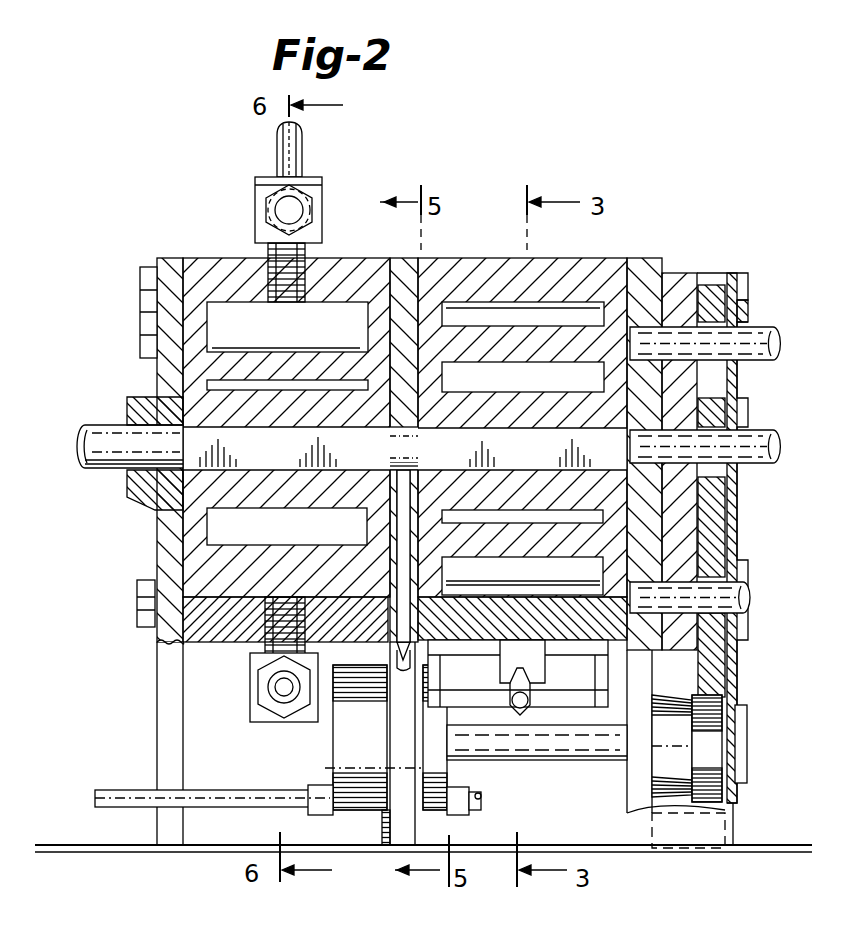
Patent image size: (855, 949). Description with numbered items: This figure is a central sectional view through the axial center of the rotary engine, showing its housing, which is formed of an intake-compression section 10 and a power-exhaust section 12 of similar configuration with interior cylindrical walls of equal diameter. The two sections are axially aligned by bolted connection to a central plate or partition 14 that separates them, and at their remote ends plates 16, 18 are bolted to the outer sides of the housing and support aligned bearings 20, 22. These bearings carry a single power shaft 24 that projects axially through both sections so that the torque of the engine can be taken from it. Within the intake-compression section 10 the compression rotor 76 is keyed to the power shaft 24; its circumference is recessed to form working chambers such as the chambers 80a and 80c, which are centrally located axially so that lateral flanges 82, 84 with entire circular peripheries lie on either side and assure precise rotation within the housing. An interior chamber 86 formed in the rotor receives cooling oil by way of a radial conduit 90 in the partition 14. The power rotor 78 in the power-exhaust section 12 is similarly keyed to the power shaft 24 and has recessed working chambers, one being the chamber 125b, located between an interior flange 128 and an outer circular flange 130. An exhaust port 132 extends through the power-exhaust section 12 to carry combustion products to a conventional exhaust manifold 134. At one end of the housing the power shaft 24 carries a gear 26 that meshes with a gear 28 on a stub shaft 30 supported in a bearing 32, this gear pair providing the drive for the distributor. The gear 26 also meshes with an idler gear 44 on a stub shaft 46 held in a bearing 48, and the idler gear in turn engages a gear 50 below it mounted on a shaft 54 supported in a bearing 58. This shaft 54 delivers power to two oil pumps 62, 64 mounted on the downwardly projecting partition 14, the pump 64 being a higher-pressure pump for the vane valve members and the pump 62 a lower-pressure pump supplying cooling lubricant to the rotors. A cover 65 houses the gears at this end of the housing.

The intake-compression section 10 is at (602, 260).
The power-exhaust section 12 is at (288, 255).
The central plate or partition 14 is at (405, 258).
The plate 16 is at (640, 278).
The plate 18 is at (170, 262).
The bearing 20 is at (630, 432).
The bearing 22 is at (130, 420).
The power shaft 24 is at (85, 455).
The gear 26 is at (712, 412).
The gear 28 is at (712, 300).
The stub shaft 30 is at (775, 340).
The bearing 32 is at (670, 300).
The idler gear 44 is at (735, 525).
The stub shaft 46 is at (742, 600).
The bearing 48 is at (680, 566).
The gear 50 is at (722, 706).
The shaft 54 is at (622, 758).
The bearing 58 is at (670, 696).
The oil pump 62 is at (440, 775).
The oil pump 64 is at (330, 772).
The cover 65 is at (740, 278).
The compression rotor 76 is at (463, 318).
The power rotor 78 is at (200, 542).
The working chamber 80a is at (518, 312).
The working chamber 80c is at (545, 600).
The lateral flange 82 is at (610, 573).
The lateral flange 84 is at (428, 573).
The interior chamber 86 is at (478, 516).
The radial conduit 90 is at (403, 527).
The working chamber 125b is at (327, 300).
The interior flange 128 is at (380, 331).
The circular flange 130 is at (190, 364).
The exhaust port 132 is at (286, 296).
The exhaust manifold 134 is at (277, 144).